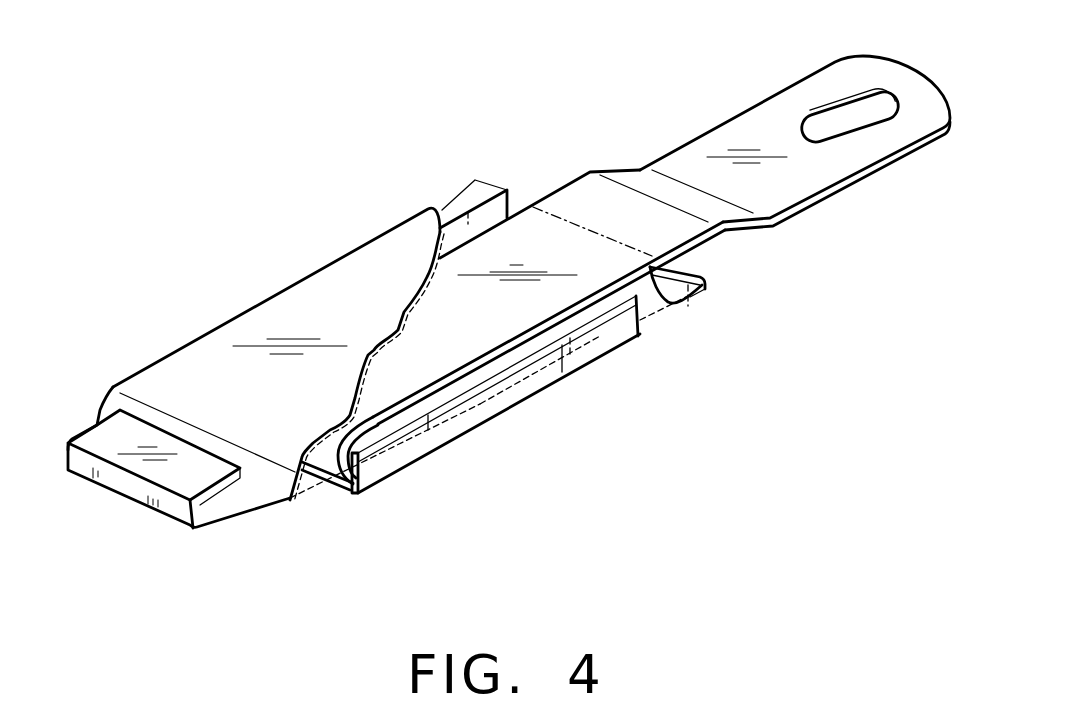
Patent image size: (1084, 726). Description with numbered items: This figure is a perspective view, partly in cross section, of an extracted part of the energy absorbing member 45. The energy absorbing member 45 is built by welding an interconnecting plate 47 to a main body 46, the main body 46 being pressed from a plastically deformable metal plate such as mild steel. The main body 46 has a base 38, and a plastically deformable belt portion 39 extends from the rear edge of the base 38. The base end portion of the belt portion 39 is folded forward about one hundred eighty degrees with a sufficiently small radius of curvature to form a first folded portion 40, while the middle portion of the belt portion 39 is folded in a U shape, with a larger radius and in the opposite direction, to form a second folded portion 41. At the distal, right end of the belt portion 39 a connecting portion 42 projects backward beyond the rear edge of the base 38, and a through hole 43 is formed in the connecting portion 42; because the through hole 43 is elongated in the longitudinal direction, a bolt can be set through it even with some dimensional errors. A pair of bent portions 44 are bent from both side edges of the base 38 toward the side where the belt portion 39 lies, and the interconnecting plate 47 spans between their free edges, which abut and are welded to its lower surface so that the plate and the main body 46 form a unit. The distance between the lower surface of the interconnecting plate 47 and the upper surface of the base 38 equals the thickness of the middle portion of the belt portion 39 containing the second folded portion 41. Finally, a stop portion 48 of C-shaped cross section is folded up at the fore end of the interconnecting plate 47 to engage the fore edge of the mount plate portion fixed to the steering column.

The base 38 is at (352, 497).
The belt portion 39 is at (537, 233).
The first folded portion 40 is at (680, 258).
The second folded portion 41 is at (327, 450).
The connecting portion 42 is at (870, 147).
The through hole 43 is at (838, 112).
The bent portions 44 is at (476, 214).
The energy absorbing member 45 is at (580, 172).
The main body 46 is at (522, 413).
The interconnecting plate 47 is at (277, 310).
The stop portion 48 is at (143, 468).